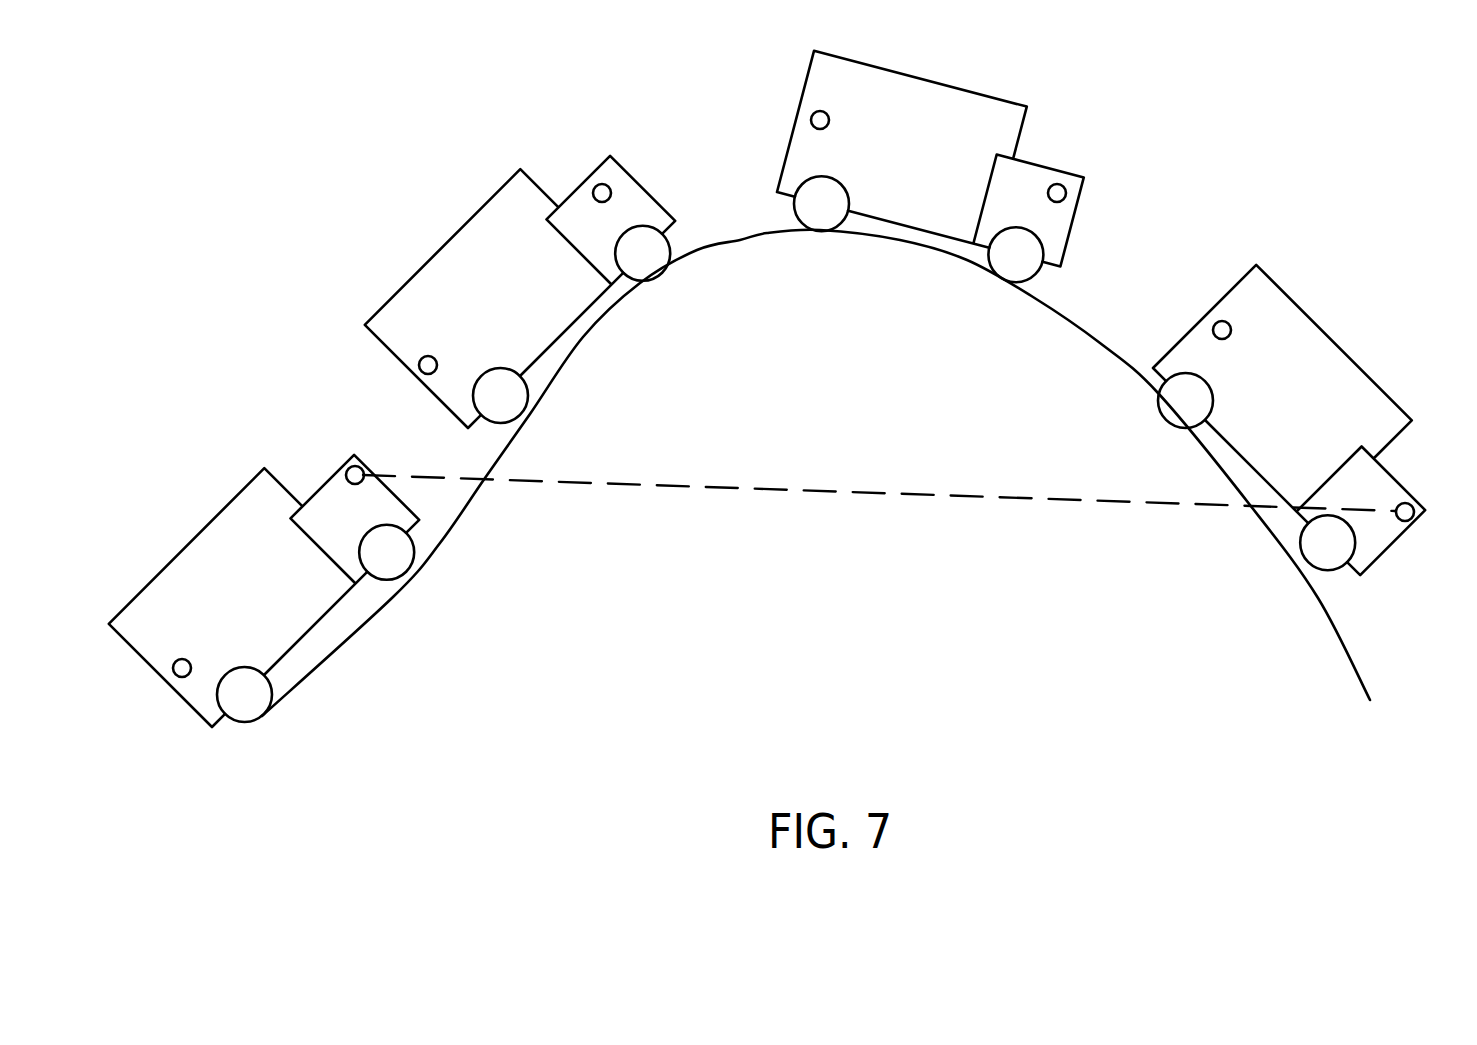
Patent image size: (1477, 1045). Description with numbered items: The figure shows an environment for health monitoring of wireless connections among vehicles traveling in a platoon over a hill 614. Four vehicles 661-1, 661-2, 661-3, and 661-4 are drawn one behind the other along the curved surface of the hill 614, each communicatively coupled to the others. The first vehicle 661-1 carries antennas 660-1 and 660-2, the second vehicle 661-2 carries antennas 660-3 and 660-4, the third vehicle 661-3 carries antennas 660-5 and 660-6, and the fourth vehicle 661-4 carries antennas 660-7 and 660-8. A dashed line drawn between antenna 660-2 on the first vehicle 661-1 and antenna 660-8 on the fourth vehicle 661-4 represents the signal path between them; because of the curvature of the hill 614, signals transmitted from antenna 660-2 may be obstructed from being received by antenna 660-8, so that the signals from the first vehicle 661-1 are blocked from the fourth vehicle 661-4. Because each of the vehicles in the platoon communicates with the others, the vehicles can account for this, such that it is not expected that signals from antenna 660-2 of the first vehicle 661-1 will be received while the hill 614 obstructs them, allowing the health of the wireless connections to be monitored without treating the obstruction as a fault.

The hill 614 is at (783, 283).
The first vehicle 661-1 is at (205, 552).
The second vehicle 661-2 is at (467, 253).
The third vehicle 661-3 is at (938, 37).
The fourth vehicle 661-4 is at (1333, 340).
The antenna 660-1 is at (172, 667).
The antenna 660-2 is at (330, 457).
The antenna 660-3 is at (419, 365).
The antenna 660-4 is at (600, 185).
The antenna 660-5 is at (815, 117).
The antenna 660-6 is at (1066, 190).
The antenna 660-7 is at (1218, 322).
The antenna 660-8 is at (1415, 512).